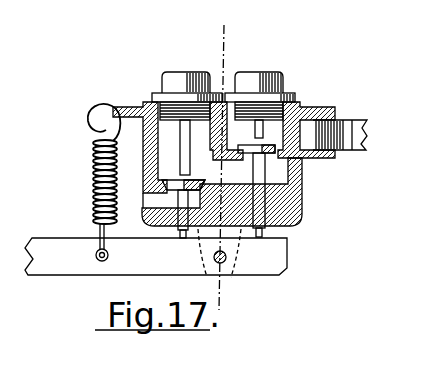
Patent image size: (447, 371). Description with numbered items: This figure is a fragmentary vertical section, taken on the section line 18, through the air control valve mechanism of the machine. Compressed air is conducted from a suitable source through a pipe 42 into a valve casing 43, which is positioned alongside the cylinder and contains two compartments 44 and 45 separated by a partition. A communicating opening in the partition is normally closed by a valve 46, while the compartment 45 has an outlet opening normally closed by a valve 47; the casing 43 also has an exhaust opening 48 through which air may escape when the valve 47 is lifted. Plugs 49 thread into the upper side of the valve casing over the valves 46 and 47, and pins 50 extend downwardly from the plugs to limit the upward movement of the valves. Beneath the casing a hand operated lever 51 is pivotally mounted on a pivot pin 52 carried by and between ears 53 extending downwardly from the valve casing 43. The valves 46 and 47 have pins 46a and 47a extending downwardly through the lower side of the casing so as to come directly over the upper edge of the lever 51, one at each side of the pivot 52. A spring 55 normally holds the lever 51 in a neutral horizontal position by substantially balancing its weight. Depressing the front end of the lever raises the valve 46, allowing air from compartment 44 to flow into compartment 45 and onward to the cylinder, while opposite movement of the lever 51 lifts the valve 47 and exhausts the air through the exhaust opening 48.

The section line 18- 18 is at (210, 165).
The pipe 42 is at (353, 152).
The valve casing 43 is at (297, 212).
The compartment 44 is at (290, 136).
The compartment 45 is at (168, 143).
The valve 46 is at (274, 149).
The pin 46a is at (258, 239).
The valve 47 is at (188, 183).
The pin 47a is at (183, 237).
The exhaust opening 48 is at (157, 202).
The plugs 49 is at (245, 78).
The pins 50 is at (182, 137).
The hand operated lever 51 is at (63, 267).
The pivot pin 52 is at (222, 264).
The ears 53 is at (240, 237).
The spring 55 is at (92, 162).